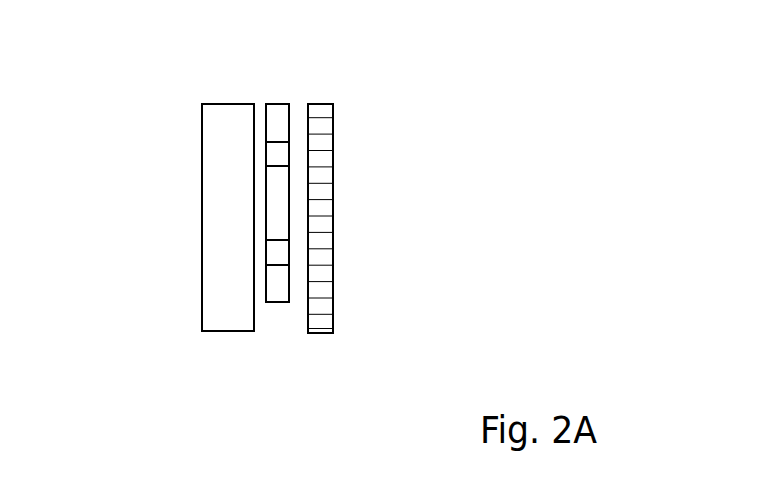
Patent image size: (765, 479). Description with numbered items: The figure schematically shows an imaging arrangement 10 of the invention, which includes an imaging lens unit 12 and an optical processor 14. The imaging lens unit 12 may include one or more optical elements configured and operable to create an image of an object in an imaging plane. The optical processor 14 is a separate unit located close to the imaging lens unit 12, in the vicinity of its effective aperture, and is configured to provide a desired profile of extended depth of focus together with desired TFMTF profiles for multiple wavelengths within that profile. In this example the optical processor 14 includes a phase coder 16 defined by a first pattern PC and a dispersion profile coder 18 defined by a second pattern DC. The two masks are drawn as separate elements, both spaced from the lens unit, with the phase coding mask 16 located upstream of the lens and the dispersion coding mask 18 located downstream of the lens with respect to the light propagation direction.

The imaging arrangement 10 is at (187, 83).
The imaging lens unit 12 is at (225, 318).
The optical processor 14 is at (350, 223).
The phase coder 16 is at (277, 303).
The dispersion profile coder 18 is at (333, 149).
The first pattern PC is at (277, 157).
The second pattern DC is at (313, 216).